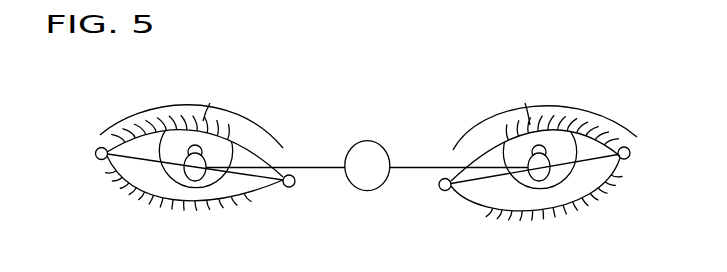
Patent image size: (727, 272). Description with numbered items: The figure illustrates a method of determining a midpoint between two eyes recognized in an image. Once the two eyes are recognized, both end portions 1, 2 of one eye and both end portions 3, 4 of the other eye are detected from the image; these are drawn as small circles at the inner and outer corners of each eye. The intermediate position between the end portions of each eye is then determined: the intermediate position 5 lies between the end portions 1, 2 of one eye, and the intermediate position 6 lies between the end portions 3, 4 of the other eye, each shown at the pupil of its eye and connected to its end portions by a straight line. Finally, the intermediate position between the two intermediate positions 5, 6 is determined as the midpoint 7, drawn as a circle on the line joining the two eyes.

The end portion of one eye 1 is at (93, 154).
The end portion of one eye 2 is at (298, 184).
The end portion of the other eye 3 is at (445, 172).
The end portion of the other eye 4 is at (632, 154).
The intermediate position 5 is at (195, 158).
The intermediate position 6 is at (539, 159).
The midpoint 7 is at (367, 175).